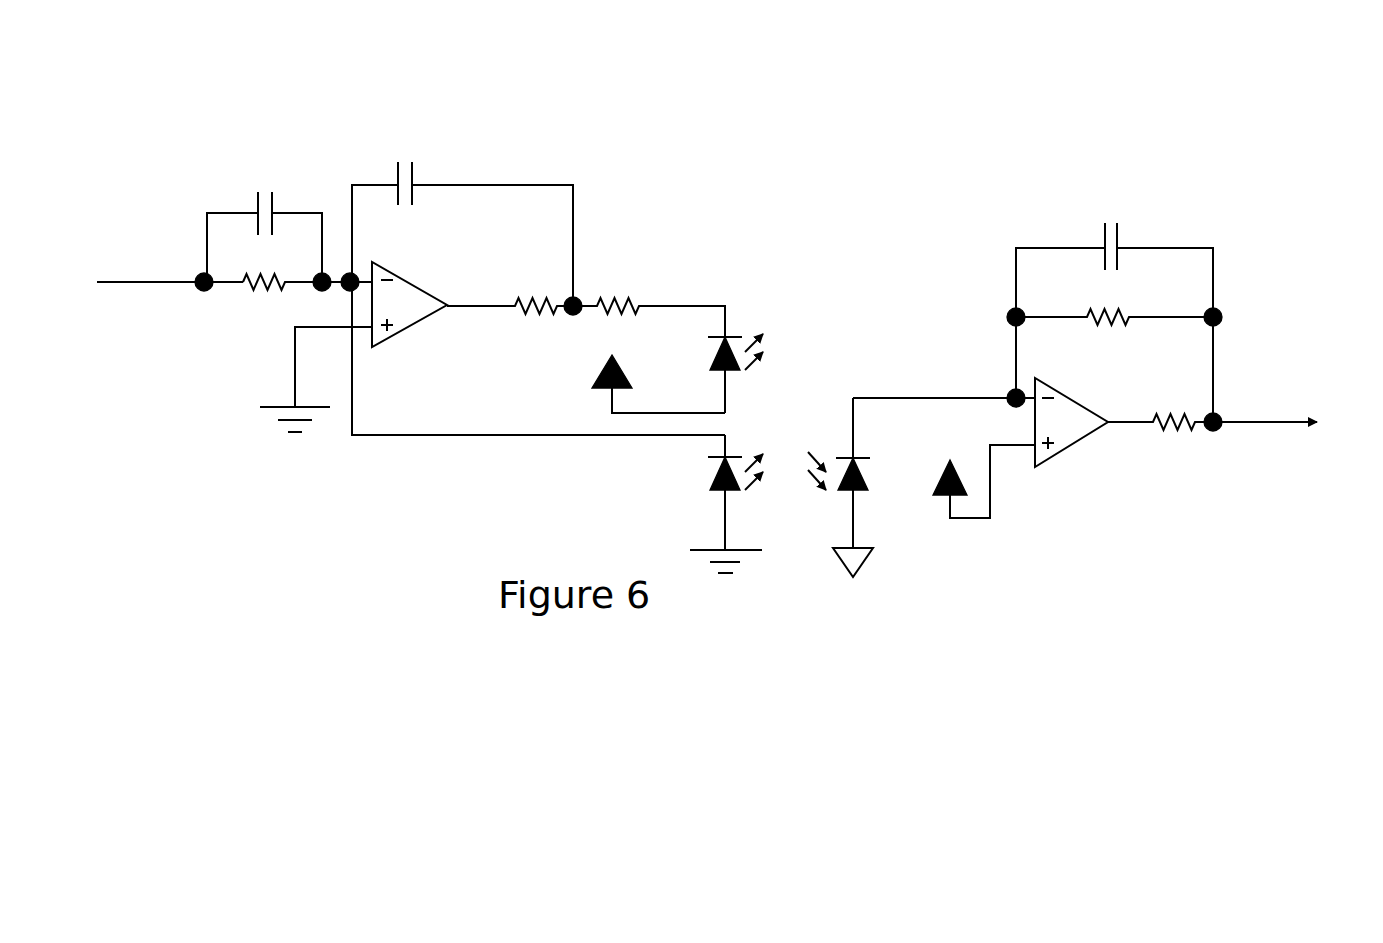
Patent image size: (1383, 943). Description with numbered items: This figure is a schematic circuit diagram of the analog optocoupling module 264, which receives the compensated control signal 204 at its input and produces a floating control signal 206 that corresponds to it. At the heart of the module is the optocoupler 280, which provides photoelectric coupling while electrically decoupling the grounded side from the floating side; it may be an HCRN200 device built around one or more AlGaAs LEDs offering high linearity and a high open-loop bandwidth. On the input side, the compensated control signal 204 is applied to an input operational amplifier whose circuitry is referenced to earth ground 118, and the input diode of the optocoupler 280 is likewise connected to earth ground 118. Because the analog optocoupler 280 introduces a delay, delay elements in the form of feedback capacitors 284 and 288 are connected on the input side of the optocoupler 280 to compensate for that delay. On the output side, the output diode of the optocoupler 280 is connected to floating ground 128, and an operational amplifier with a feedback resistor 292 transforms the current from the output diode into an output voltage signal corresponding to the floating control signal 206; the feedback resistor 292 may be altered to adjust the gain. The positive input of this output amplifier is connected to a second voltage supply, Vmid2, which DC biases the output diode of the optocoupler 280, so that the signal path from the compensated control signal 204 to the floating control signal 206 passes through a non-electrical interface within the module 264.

The analog optocoupling module 264 is at (320, 67).
The compensated control signal 204 is at (172, 283).
The feedback capacitor 288 is at (258, 208).
The feedback capacitor 284 is at (413, 176).
The optocoupler 280 is at (812, 272).
The earth ground 118 is at (740, 567).
The floating ground 128 is at (862, 563).
The feedback resistor 292 is at (1123, 308).
The floating control signal 206 is at (1252, 423).